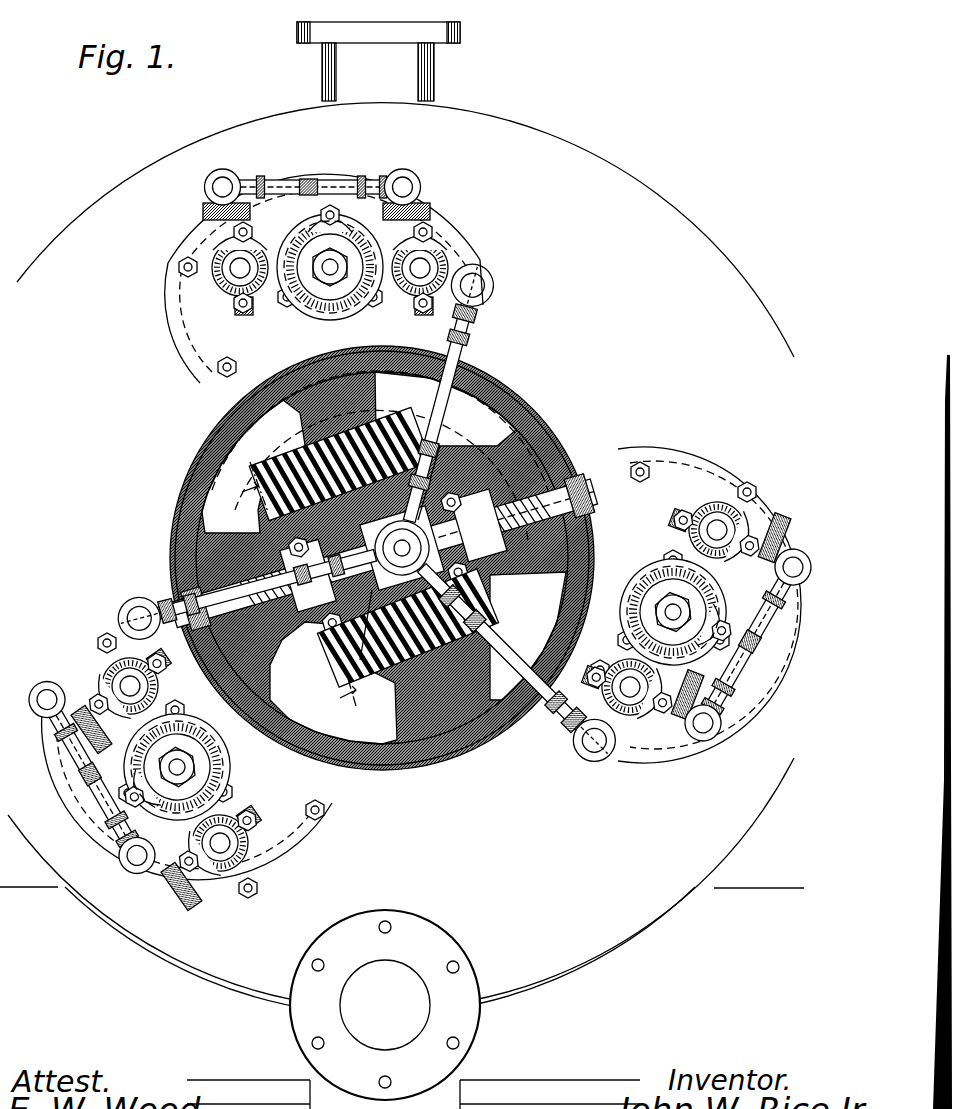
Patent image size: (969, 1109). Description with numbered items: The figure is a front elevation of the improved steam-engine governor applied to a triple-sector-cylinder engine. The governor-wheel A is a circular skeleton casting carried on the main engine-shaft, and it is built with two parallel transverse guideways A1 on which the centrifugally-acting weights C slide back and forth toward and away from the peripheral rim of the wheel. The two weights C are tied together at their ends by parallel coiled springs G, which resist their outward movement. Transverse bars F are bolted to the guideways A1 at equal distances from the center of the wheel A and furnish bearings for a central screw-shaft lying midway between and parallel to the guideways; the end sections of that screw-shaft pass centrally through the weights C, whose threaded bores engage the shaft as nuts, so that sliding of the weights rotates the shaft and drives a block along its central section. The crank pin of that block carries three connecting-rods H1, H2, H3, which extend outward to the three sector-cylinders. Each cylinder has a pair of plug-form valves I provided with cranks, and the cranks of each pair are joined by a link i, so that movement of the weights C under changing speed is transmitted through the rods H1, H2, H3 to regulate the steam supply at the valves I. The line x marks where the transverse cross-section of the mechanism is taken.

The governor-wheel A is at (476, 752).
The guideways A1 is at (535, 452).
The weights C is at (532, 480).
The transverse bars F is at (436, 446).
The coiled springs G is at (292, 500).
The connecting-rod H1 is at (468, 332).
The connecting-rod H2 is at (200, 606).
The connecting-rod H3 is at (578, 708).
The valves I is at (237, 262).
The links i is at (303, 192).
The section line x is at (303, 582).